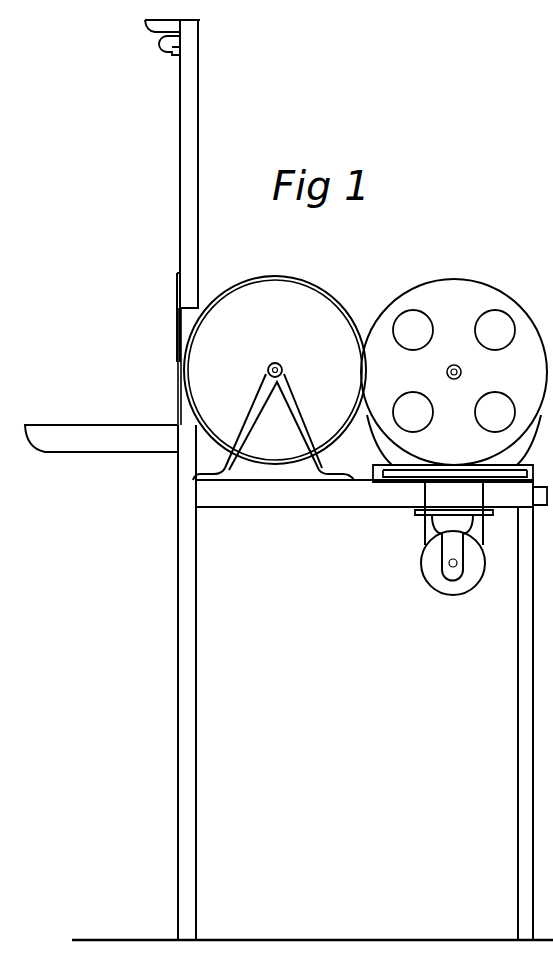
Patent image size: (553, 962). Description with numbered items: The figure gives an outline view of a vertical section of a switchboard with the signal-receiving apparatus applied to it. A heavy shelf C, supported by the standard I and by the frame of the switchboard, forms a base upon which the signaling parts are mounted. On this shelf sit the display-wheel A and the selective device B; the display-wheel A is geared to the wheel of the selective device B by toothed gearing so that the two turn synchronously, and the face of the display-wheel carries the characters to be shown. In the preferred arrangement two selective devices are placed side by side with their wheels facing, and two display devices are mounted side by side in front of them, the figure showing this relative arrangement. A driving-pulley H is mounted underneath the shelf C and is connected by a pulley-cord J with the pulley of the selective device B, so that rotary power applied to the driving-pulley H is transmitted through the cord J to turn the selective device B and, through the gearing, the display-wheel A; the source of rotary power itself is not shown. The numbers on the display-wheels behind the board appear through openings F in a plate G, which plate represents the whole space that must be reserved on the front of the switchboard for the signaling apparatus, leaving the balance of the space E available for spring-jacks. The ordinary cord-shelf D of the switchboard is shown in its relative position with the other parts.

The display-wheel A is at (275, 378).
The selective device B is at (454, 380).
The heavy shelf C is at (371, 493).
The cord-shelf D is at (101, 439).
The space for spring-jacks E is at (172, 164).
The opening F is at (166, 366).
The plate G is at (177, 313).
The driving-pulley H is at (452, 574).
The standard I is at (512, 723).
The pulley-cord J is at (444, 531).